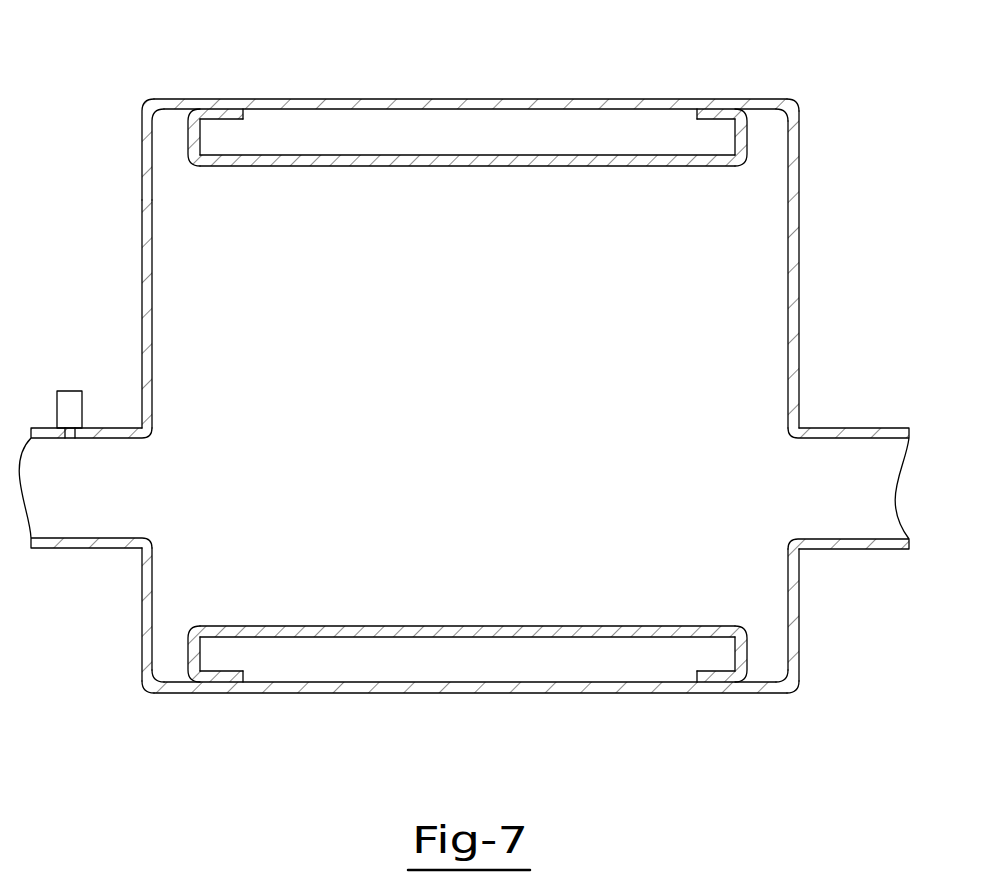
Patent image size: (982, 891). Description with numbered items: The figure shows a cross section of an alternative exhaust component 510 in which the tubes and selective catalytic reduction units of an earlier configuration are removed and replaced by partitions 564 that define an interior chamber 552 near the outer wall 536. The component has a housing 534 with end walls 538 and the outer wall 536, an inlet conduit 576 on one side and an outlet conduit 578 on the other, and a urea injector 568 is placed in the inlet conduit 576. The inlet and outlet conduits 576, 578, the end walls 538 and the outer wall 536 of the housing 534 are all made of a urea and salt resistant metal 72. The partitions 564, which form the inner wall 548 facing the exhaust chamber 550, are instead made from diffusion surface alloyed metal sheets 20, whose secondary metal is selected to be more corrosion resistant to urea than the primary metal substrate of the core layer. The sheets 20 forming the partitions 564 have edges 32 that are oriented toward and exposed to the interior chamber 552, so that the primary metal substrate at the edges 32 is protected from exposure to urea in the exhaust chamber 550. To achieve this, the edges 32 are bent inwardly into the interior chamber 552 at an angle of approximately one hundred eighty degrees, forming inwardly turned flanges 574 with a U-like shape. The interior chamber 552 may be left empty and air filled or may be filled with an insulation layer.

The exhaust component 510 is at (111, 114).
The urea and salt resistant metal 72 is at (145, 145).
The end walls 538 is at (139, 252).
The outer wall 536 is at (425, 100).
The housing 534 is at (791, 92).
The inlet conduit 576 is at (97, 551).
The outlet conduit 578 is at (825, 552).
The urea injector 568 is at (68, 400).
The exhaust chamber 550 is at (471, 412).
The diffusion surface alloyed metal sheet 20 is at (470, 168).
The interior chamber 552 is at (509, 146).
The partitions 564 is at (303, 169).
The inner wall 548 is at (688, 169).
The inwardly turned flanges 574 is at (222, 114).
The edges 32 is at (245, 114).